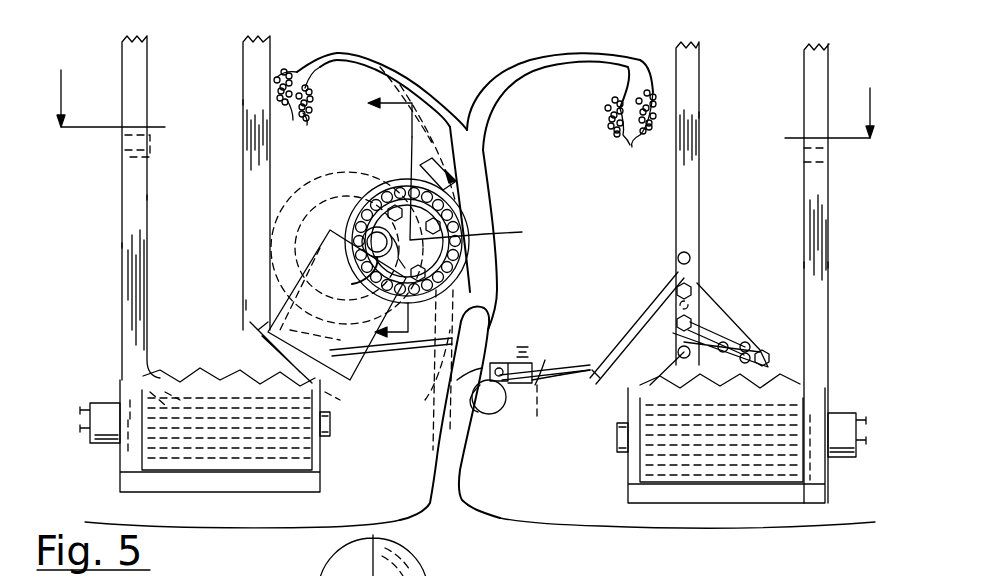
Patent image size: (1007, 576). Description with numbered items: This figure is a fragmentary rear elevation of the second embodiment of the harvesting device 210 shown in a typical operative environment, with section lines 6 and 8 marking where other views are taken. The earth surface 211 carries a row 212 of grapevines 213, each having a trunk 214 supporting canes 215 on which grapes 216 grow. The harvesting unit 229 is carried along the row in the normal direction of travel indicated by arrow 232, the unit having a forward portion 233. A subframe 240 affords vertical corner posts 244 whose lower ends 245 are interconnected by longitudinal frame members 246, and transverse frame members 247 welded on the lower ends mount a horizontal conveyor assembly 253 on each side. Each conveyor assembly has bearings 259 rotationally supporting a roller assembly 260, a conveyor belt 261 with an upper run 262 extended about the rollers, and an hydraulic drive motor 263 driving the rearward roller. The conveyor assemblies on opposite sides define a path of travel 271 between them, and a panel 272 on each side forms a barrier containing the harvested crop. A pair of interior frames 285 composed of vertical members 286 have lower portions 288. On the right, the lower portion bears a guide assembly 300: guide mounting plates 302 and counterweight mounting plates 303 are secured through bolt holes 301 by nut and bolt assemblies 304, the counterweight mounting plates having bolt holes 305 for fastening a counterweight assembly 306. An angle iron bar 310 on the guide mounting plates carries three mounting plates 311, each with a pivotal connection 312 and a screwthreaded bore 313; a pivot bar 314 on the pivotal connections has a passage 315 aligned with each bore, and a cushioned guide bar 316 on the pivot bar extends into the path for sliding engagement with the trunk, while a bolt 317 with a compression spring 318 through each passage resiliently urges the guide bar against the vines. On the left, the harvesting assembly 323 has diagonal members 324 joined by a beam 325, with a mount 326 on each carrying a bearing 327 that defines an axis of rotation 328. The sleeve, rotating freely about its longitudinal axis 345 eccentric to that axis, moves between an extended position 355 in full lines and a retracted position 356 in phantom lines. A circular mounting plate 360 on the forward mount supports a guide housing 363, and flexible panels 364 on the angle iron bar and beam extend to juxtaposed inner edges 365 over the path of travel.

The section line 6- 6 is at (467, 89).
The section line 8- 8 is at (377, 220).
The harvesting device 210 is at (115, 288).
The earth surface 211 is at (522, 522).
The row 212 is at (457, 482).
The grapevines 213 is at (425, 400).
The trunk 214 is at (496, 268).
The canes 215 is at (345, 55).
The grapes 216 is at (466, 120).
The harvesting unit 229 is at (838, 212).
The arrow 232 is at (480, 575).
The forward portion 233 is at (636, 562).
The subframe 240 is at (120, 190).
The corner posts 244 is at (122, 243).
The lower ends 245 is at (118, 482).
The longitudinal frame members 246 is at (128, 150).
The transverse frame members 247 is at (252, 493).
The horizontal conveyor assembly 253 is at (325, 473).
The bearings 259 is at (125, 440).
The roller assembly 260 is at (212, 440).
The conveyor belt 261 is at (182, 455).
The upper run 262 is at (228, 388).
The hydraulic drive motor 263 is at (105, 410).
The path of travel 271 is at (412, 480).
The panel 272 is at (148, 198).
The interior frames 285 is at (243, 74).
The vertical members 286 is at (243, 100).
The lower portions 288 is at (247, 305).
The guide assembly 300 is at (705, 225).
The bolt holes 301 is at (690, 258).
The guide mounting plates 302 is at (655, 358).
The counterweight mounting plates 303 is at (740, 335).
The nut and bolt assemblies 304 is at (693, 290).
The bolt holes 305 is at (745, 347).
The counterweight assembly 306 is at (775, 358).
The angle iron bar 310 is at (590, 373).
The mounting plates 311 is at (565, 410).
The pivotal connection 312 is at (506, 409).
The screwthreaded bore 313 is at (556, 378).
The pivot bar 314 is at (457, 380).
The passage 315 is at (506, 355).
The cushioned guide bar 316 is at (486, 414).
The bolt 317 is at (545, 360).
The compression spring 318 is at (532, 370).
The harvesting assembly 323 is at (502, 197).
The diagonal members 324 is at (262, 338).
The beam 325 is at (350, 380).
The mount 326 is at (328, 333).
The bearing 327 is at (365, 238).
The axis of rotation 328 is at (370, 270).
The longitudinal axis 345 is at (457, 220).
The extended position 355 is at (412, 170).
The retracted position 356 is at (290, 195).
The circular mounting plate 360 is at (372, 182).
The guide housing 363 is at (325, 570).
The flexible panels 364 is at (408, 345).
The inner edges 365 is at (490, 318).